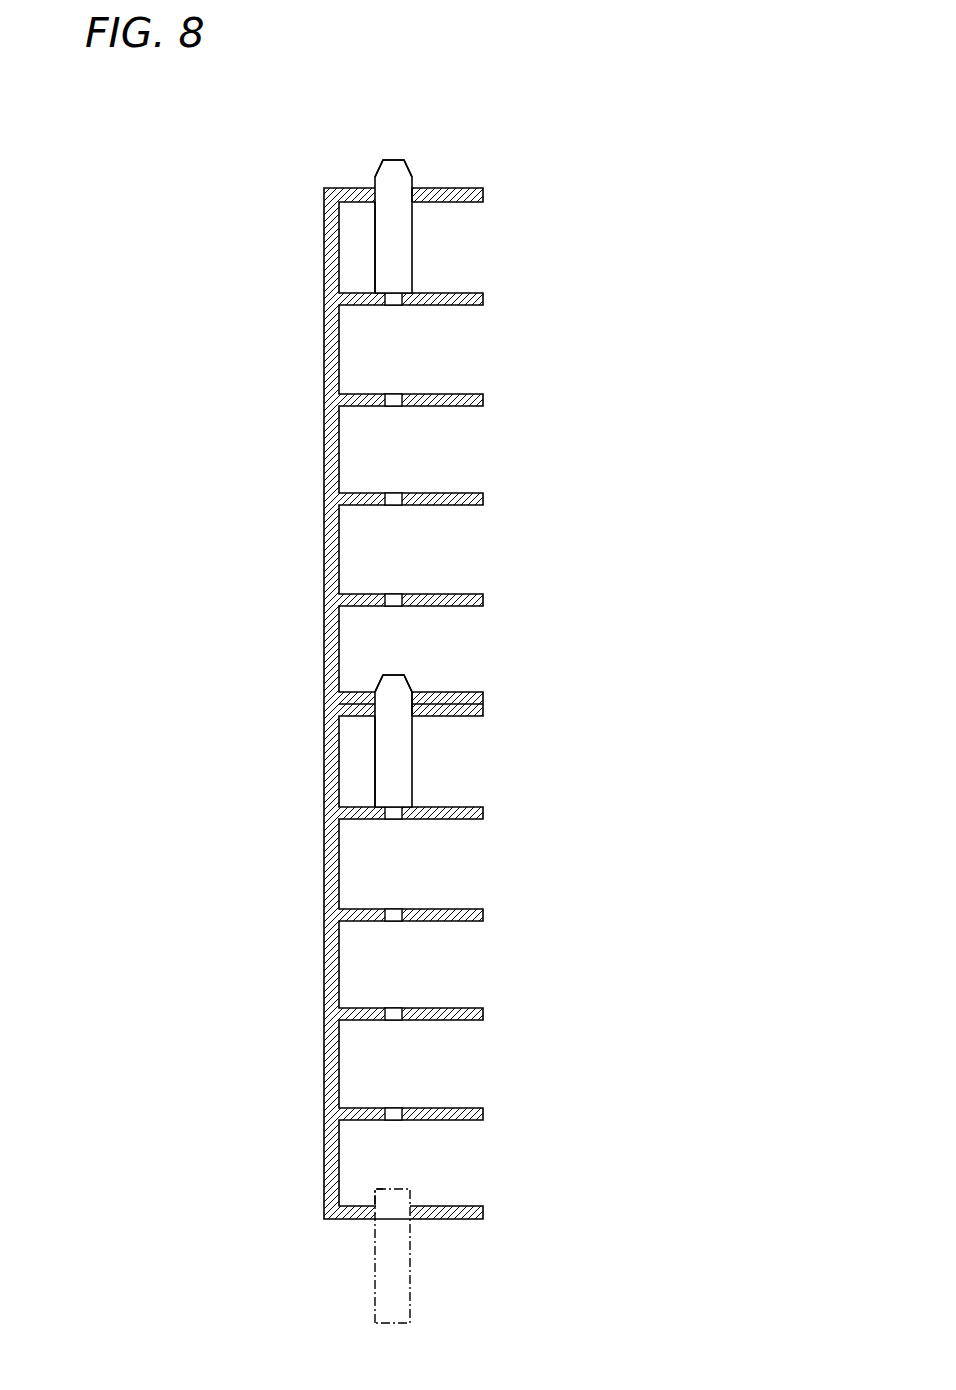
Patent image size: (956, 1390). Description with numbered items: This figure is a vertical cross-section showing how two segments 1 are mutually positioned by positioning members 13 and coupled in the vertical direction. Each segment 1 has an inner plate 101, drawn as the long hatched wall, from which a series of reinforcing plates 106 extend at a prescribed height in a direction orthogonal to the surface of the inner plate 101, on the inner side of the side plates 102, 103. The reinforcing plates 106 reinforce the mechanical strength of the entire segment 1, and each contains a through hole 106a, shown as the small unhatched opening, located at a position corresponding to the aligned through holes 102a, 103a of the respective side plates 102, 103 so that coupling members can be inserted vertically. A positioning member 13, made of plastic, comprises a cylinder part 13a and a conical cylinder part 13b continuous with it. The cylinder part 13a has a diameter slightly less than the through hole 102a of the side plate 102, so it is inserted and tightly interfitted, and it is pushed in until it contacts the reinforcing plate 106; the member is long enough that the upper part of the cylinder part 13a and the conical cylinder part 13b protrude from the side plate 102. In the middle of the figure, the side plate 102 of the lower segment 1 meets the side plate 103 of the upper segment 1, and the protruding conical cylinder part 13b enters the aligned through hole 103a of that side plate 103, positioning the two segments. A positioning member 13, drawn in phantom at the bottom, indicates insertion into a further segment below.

The segment 1 is at (281, 468).
The inner plate 101 is at (324, 432).
The side plate 102 is at (452, 188).
The through hole 102a is at (413, 181).
The side plate 103 is at (480, 692).
The through hole 103a is at (413, 690).
The reinforcing plate 106 is at (468, 305).
The through hole 106a is at (402, 305).
The positioning member 13 is at (412, 252).
The cylinder part 13a is at (375, 262).
The conical cylinder part 13b is at (382, 168).